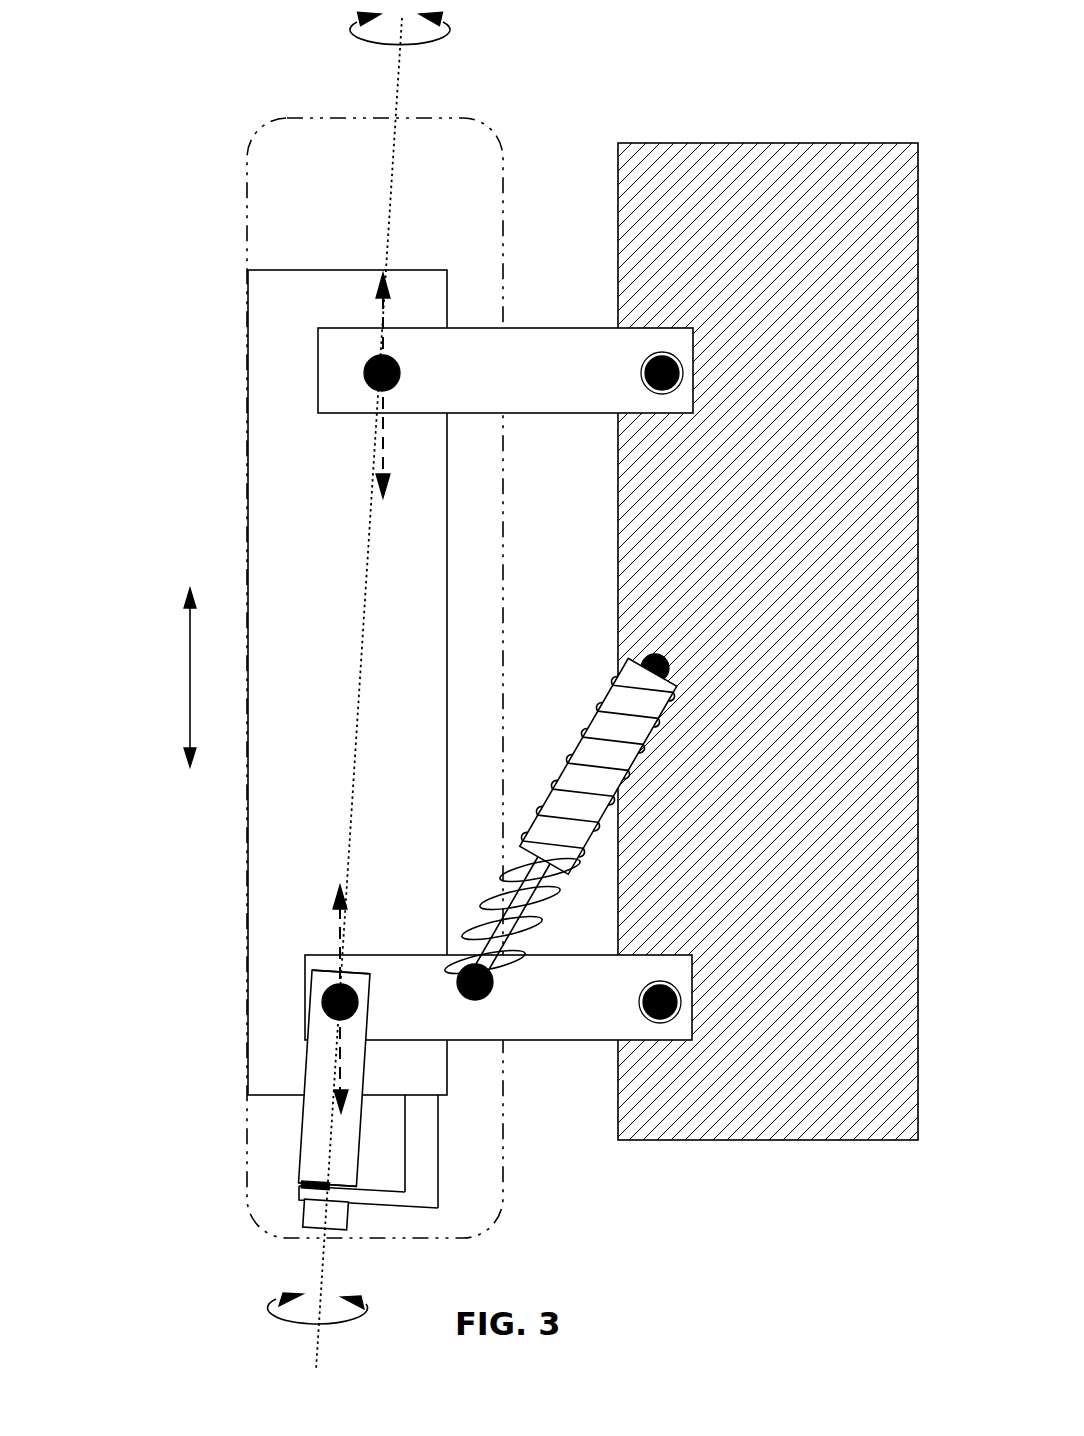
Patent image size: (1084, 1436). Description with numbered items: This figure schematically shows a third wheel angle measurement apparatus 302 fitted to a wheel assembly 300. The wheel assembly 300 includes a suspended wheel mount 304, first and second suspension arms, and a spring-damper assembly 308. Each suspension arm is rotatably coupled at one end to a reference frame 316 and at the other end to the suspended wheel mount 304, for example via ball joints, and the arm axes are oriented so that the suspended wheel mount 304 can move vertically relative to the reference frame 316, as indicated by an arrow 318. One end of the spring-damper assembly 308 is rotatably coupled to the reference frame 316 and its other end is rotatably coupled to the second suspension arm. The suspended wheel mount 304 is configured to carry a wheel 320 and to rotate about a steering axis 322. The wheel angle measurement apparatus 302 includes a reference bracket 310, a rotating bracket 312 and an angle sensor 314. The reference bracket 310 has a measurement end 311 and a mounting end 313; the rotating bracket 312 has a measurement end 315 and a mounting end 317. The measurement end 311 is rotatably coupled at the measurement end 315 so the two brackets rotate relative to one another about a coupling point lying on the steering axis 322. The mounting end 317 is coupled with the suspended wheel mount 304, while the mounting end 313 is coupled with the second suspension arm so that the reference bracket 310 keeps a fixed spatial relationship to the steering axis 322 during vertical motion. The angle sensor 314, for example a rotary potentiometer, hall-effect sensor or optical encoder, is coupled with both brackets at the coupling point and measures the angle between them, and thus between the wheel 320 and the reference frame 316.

The wheel assembly 300 is at (277, 97).
The wheel angle measurement apparatus 302 is at (192, 1150).
The suspended wheel mount 304 is at (447, 520).
The spring-damper assembly 308 is at (588, 728).
The reference bracket 310 is at (305, 1070).
The measurement end 311 is at (300, 1178).
The rotating bracket 312 is at (438, 1188).
The mounting end 313 is at (330, 970).
The angle sensor 314 is at (347, 1222).
The measurement end 315 is at (293, 1197).
The reference frame 316 is at (785, 1141).
The mounting end 317 is at (440, 1108).
The arrow 318 is at (190, 668).
The wheel 320 is at (247, 198).
The steering axis 322 is at (365, 585).